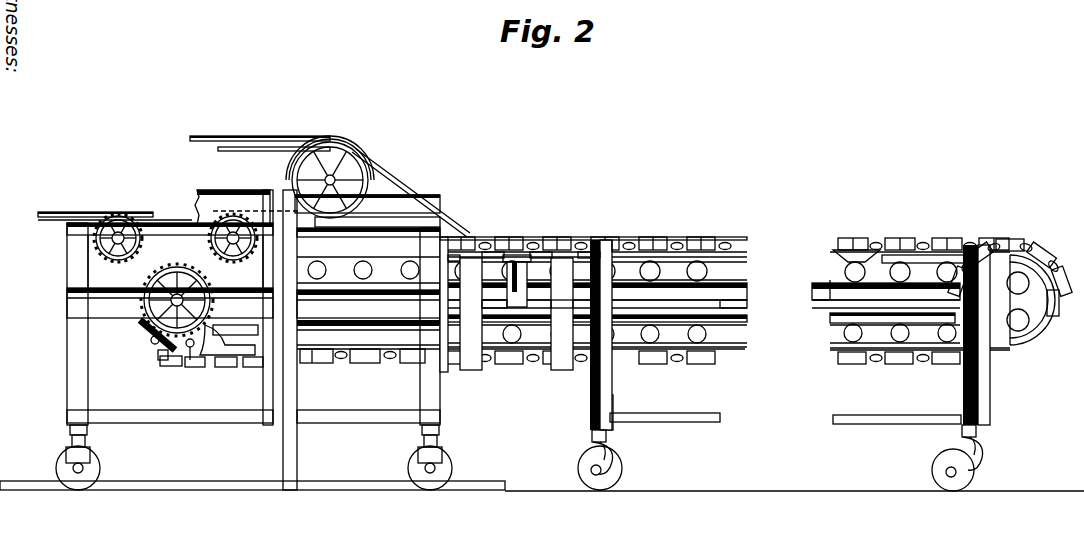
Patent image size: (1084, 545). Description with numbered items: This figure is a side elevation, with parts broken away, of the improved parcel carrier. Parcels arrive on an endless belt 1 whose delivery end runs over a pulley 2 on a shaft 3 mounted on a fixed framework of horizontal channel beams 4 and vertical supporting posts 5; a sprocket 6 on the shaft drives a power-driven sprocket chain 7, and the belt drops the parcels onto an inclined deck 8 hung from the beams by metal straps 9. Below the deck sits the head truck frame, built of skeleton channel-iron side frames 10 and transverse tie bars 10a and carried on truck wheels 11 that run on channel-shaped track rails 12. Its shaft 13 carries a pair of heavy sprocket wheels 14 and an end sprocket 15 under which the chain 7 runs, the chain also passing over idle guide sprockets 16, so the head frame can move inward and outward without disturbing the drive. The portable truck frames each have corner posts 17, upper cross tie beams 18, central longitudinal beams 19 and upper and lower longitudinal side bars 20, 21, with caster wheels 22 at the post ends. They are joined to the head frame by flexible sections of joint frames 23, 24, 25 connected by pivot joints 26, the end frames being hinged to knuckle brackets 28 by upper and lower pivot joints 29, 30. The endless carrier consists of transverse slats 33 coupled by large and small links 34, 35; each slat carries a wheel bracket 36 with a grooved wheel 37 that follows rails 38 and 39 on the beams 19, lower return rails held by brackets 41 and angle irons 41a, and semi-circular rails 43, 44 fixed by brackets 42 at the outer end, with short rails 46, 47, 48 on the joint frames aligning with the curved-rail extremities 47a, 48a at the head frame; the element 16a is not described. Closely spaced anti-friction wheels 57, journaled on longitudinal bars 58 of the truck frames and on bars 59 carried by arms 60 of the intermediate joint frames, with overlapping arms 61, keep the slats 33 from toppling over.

The endless belt 1 is at (203, 136).
The pulley 2 is at (340, 142).
The shaft 3 is at (373, 181).
The horizontal channel beams 4 is at (228, 200).
The vertical supporting posts 5 is at (281, 447).
The sprocket 6 is at (364, 166).
The power-driven sprocket chain 7 is at (256, 148).
The inclined deck 8 is at (410, 195).
The metal straps 9 is at (412, 212).
The skeleton channel-iron side frames 10 is at (96, 306).
The transverse tie bars 10a is at (215, 326).
The truck wheels 11 is at (62, 464).
The track rails 12 is at (142, 490).
The shaft 13 is at (150, 345).
The sprocket wheels 14 is at (163, 352).
The sprocket 15 is at (132, 330).
The idle guide sprockets 16 is at (120, 216).
The bar 16a is at (403, 292).
The corner posts 17 is at (605, 363).
The upper cross tie beams 18 is at (617, 293).
The central longitudinal beams 19 is at (812, 297).
The upper longitudinal side bars 20 is at (693, 303).
The lower longitudinal side bars 21 is at (696, 413).
The caster wheels 22 is at (617, 456).
The end joint frame 23 is at (471, 370).
The intermediate joint frame 24 is at (517, 310).
The end joint frame 25 is at (562, 370).
The pivot joints 26 is at (507, 292).
The knuckle brackets 28 is at (436, 340).
The upper pivot joint 29 is at (616, 250).
The lower pivot joint 30 is at (572, 380).
The transverse slats 33 is at (311, 364).
The large links 34 is at (718, 256).
The small links 35 is at (682, 248).
The wheel bracket 36 is at (845, 364).
The grooved wheel 37 is at (320, 270).
The upper rail 38 is at (833, 283).
The lower rail 39 is at (840, 322).
The brackets 41 is at (621, 345).
The longitudinal angle irons 41a is at (728, 333).
The brackets 42 is at (1057, 302).
The semi-circular rail 43 is at (1025, 277).
The semi-circular rail 44 is at (1034, 264).
The short rail 46 is at (545, 250).
The short rail 47 is at (546, 240).
The curved rail extremity 47a is at (350, 292).
The short rail 48 is at (500, 352).
The lower horizontal rail portion 48a is at (238, 368).
The anti-friction wheels 57 is at (598, 252).
The longitudinal bars 58 is at (746, 262).
The bars 59 is at (462, 258).
The arms 60 is at (586, 255).
The horizontally extended arms 61 is at (478, 256).